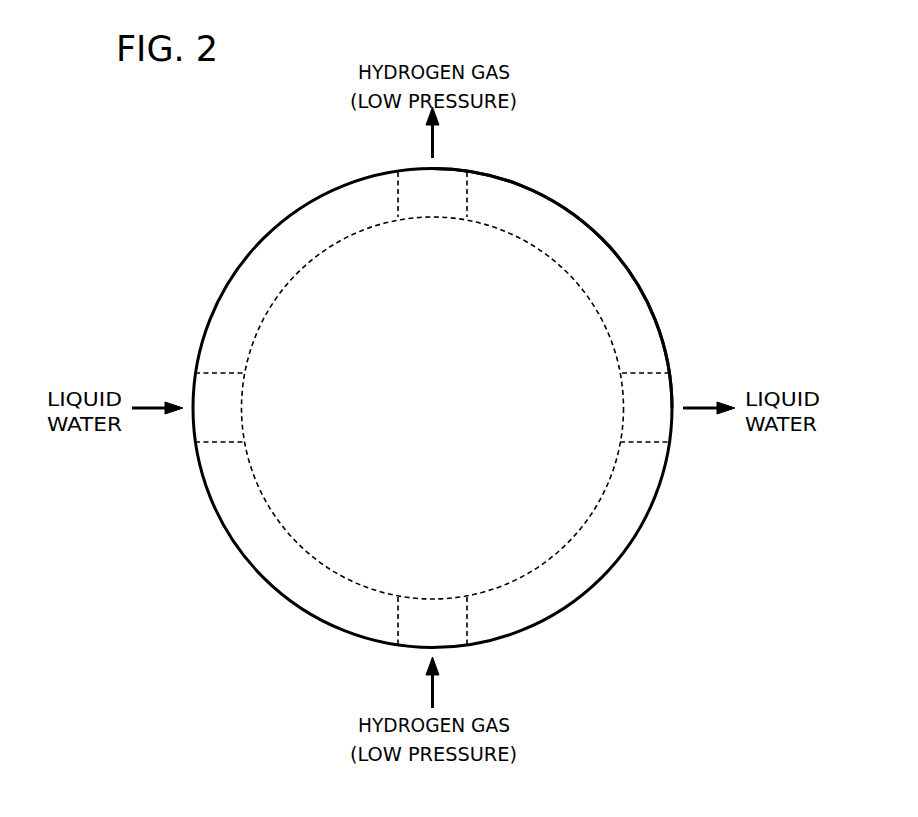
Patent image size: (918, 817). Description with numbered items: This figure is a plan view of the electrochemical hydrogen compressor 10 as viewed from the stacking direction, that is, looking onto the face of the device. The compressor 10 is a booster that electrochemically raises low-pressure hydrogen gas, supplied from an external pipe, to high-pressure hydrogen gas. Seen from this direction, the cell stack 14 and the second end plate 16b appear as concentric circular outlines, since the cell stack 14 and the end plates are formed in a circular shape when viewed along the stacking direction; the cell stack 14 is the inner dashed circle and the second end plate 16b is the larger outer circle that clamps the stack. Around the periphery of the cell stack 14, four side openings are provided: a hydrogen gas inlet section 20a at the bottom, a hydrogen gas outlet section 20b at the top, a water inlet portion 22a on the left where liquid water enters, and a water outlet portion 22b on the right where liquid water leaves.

The electrochemical hydrogen compressor 10 is at (200, 131).
The cell stack 14 is at (553, 259).
The second end plate 16b is at (628, 512).
The hydrogen gas inlet section 20a is at (467, 622).
The hydrogen gas outlet section 20b is at (467, 196).
The water inlet portion 22a is at (218, 373).
The water outlet portion 22b is at (647, 373).